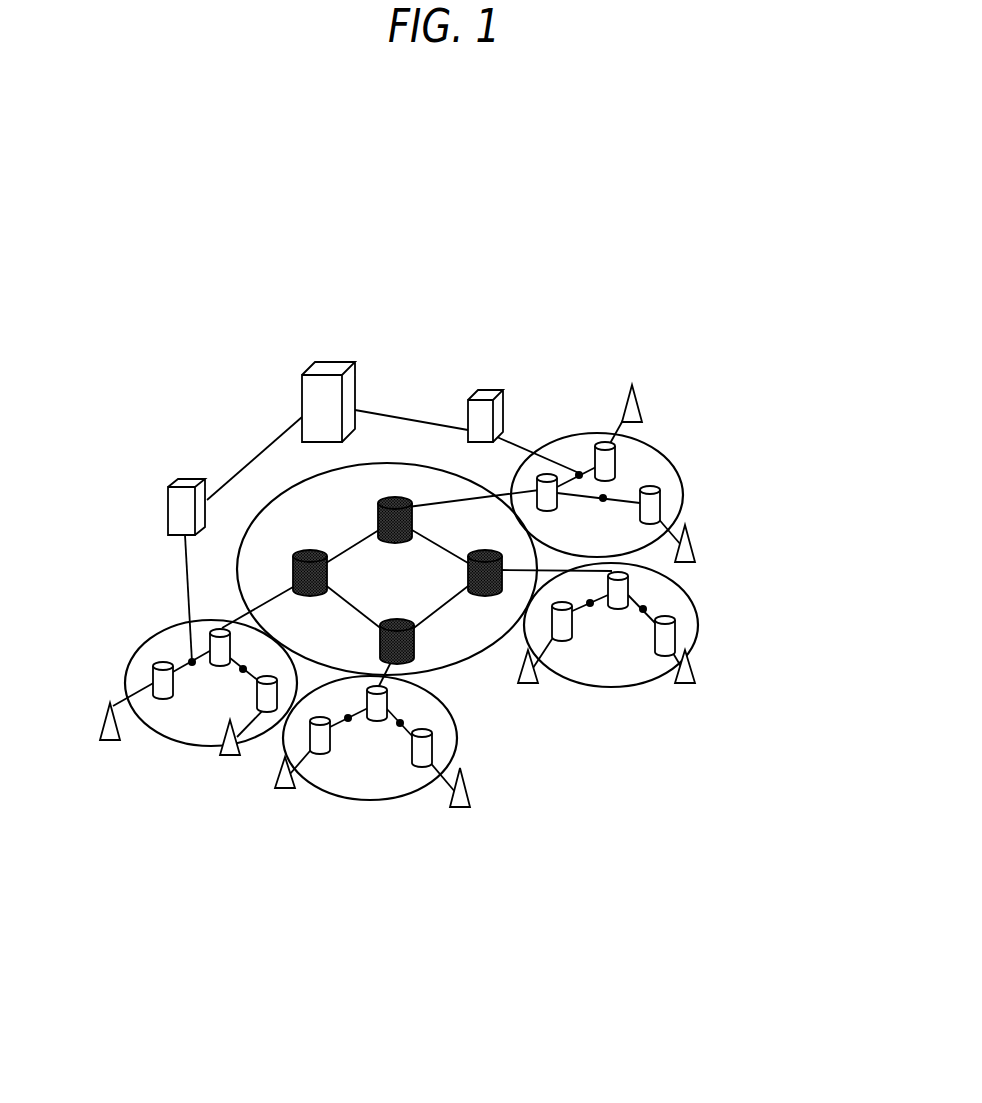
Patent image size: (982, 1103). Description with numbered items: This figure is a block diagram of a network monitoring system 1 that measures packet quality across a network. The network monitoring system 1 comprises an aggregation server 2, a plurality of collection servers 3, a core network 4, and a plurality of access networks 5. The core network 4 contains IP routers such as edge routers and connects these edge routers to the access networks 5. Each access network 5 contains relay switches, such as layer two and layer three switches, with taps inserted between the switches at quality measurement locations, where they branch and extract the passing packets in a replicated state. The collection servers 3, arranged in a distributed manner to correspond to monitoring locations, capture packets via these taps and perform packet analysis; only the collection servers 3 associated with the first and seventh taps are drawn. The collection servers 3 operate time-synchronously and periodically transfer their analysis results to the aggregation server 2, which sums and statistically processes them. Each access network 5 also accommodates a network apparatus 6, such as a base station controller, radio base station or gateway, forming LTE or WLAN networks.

The network monitoring system 1 is at (331, 285).
The aggregation server 2 is at (323, 362).
The collection server 3 is at (185, 480).
The core network 4 is at (475, 658).
The access network 5 is at (203, 747).
The network apparatus 6 is at (115, 742).